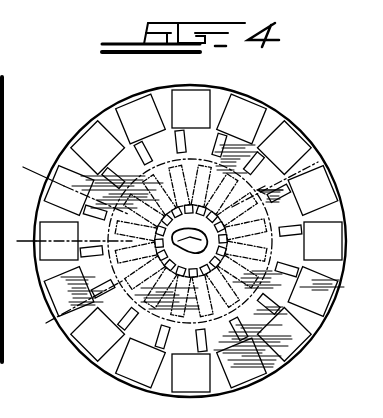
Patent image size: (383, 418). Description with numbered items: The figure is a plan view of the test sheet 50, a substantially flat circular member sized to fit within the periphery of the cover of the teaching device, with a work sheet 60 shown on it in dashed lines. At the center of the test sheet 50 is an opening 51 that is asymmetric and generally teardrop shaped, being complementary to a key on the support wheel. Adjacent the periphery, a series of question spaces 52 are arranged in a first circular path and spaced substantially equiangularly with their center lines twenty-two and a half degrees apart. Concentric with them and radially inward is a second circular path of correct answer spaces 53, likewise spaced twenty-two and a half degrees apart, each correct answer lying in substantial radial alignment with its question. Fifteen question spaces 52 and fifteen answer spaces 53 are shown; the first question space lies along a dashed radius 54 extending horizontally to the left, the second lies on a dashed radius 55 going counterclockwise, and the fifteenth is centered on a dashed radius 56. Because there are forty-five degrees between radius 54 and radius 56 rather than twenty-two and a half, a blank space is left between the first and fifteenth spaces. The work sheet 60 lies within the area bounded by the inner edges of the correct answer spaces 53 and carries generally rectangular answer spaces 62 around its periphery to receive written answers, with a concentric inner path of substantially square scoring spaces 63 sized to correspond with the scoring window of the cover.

The test sheet 50 is at (190, 237).
The opening 51 is at (160, 276).
The question spaces 52 is at (206, 93).
The correct answer spaces 53 is at (168, 132).
The radius 54 is at (25, 243).
The radius 55 is at (44, 175).
The radius 56 is at (68, 348).
The work sheet 60 is at (318, 162).
The answer spaces 62 is at (46, 326).
The scoring spaces 63 is at (153, 336).